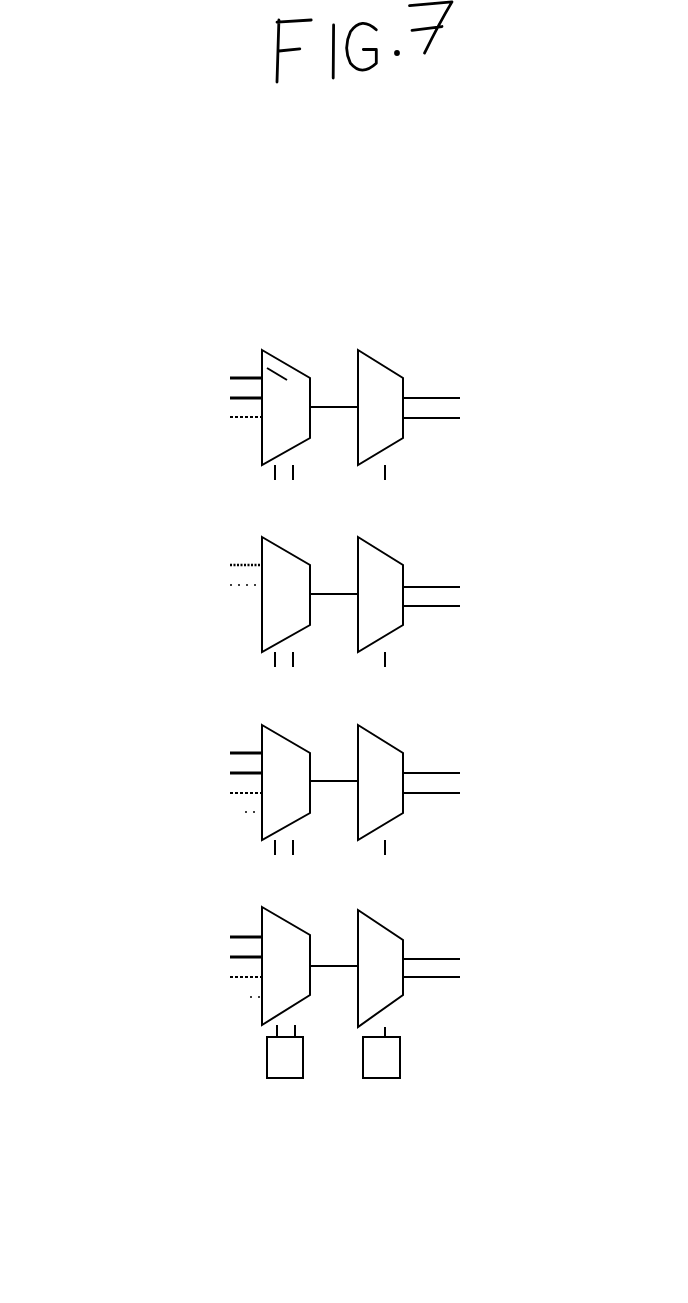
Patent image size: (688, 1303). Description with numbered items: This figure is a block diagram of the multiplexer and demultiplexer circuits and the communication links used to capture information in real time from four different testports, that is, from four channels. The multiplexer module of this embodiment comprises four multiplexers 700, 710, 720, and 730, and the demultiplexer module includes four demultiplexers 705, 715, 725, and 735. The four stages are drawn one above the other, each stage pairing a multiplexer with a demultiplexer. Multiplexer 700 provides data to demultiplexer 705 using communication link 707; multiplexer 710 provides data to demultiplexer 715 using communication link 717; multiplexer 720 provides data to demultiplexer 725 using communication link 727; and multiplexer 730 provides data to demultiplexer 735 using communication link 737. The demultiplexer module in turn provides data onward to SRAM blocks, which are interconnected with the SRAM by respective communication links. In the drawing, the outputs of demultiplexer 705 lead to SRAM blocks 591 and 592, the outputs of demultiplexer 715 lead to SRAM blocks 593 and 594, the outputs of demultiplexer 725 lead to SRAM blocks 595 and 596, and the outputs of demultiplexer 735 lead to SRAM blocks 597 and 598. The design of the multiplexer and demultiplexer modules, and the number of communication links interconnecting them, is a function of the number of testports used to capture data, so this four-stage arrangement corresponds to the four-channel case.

The multiplexer 700 is at (260, 353).
The demultiplexer 705 is at (378, 382).
The communication link 707 is at (335, 403).
The SRAM block 591 is at (452, 393).
The SRAM block 592 is at (453, 427).
The multiplexer 710 is at (288, 615).
The demultiplexer 715 is at (378, 570).
The communication link 717 is at (335, 587).
The SRAM block 593 is at (445, 582).
The SRAM block 594 is at (447, 613).
The multiplexer 720 is at (280, 810).
The demultiplexer 725 is at (378, 752).
The communication link 727 is at (330, 783).
The SRAM block 595 is at (445, 770).
The SRAM block 596 is at (450, 793).
The multiplexer 730 is at (285, 987).
The demultiplexer 735 is at (378, 938).
The communication link 737 is at (337, 967).
The SRAM block 597 is at (445, 952).
The SRAM block 598 is at (445, 987).